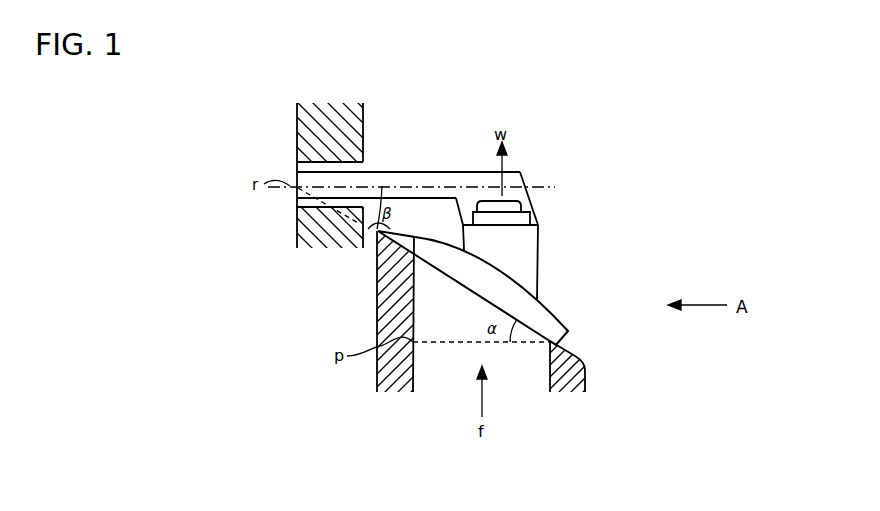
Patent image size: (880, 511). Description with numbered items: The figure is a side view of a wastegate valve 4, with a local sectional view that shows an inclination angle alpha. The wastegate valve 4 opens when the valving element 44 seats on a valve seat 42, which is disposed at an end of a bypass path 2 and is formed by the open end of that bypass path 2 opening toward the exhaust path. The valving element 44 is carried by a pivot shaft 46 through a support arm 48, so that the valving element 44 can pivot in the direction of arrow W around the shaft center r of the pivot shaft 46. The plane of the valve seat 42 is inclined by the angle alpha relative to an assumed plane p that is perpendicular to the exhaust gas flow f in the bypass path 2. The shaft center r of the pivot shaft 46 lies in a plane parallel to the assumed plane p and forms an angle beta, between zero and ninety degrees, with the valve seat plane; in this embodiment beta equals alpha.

The bypass path 2 is at (533, 383).
The wastegate valve 4 is at (642, 237).
The valve seat 42 is at (377, 233).
The valving element 44 is at (547, 313).
The pivot shaft 46 is at (410, 176).
The support arm 48 is at (530, 253).